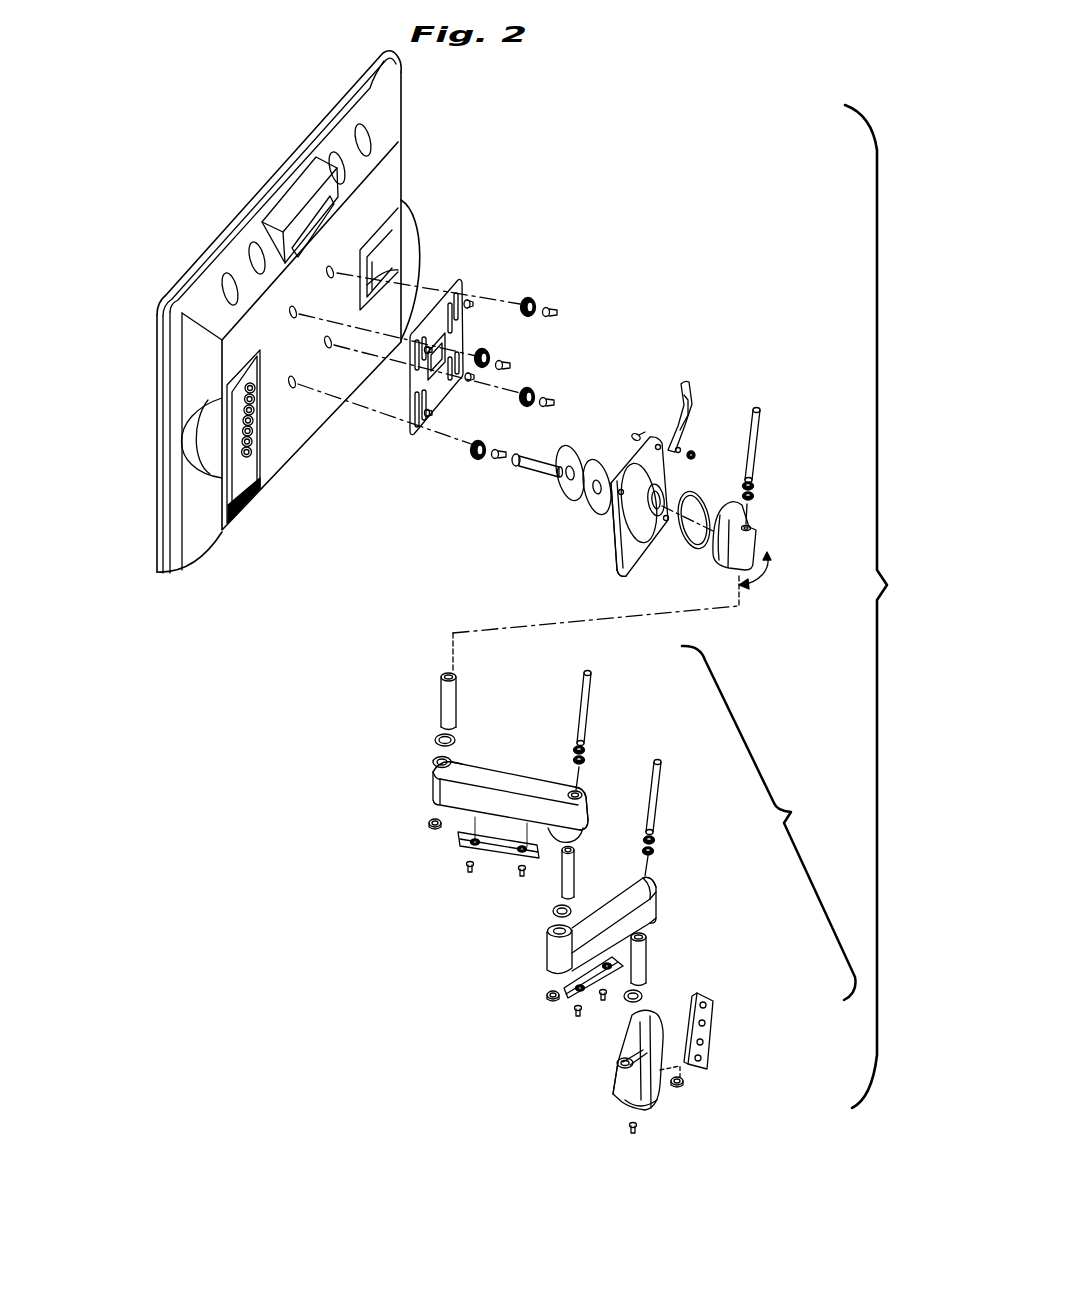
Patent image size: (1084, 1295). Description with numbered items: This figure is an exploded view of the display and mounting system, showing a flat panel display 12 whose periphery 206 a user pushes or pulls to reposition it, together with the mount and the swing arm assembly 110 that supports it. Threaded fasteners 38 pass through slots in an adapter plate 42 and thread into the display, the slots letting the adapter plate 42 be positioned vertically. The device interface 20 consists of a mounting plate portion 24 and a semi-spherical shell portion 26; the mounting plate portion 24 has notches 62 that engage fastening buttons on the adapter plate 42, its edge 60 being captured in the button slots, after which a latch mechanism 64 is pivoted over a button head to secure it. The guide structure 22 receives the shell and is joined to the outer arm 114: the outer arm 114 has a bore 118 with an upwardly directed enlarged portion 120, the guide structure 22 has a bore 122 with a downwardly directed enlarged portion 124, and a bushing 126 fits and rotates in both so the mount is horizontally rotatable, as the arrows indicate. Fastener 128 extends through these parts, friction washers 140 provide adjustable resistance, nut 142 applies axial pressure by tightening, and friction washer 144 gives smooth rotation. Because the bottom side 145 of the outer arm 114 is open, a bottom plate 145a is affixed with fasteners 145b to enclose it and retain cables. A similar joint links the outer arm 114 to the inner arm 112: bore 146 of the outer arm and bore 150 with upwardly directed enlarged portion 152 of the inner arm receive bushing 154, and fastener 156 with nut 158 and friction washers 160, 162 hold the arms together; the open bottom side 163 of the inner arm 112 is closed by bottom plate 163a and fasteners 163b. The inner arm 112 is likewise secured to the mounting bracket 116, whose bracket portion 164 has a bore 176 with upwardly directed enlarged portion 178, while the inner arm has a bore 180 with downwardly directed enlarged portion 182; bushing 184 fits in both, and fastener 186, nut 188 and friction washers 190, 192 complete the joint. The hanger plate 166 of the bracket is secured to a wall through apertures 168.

The flat panel display 12 is at (206, 548).
The periphery 206 is at (157, 413).
The adapter plate 42 is at (410, 432).
The threaded fasteners 38 is at (430, 340).
The notches 62 is at (653, 446).
The edge 60 is at (630, 450).
The latch mechanism 64 is at (693, 382).
The mounting plate portion 24 is at (650, 545).
The semi-spherical shell portion 26 is at (620, 533).
The device interface 20 is at (632, 570).
The fastener 128 is at (760, 437).
The friction washers 140 is at (754, 496).
The guide structure 22 is at (757, 535).
The bore 122 is at (750, 527).
The enlarged portion 124 is at (722, 583).
The swing arm assembly 110 is at (769, 823).
The bushing 126 is at (441, 688).
The friction washer 144 is at (435, 738).
The outer arm 114 is at (498, 771).
The bore 118 is at (433, 763).
The enlarged portion 120 is at (448, 767).
The bottom side 145 is at (580, 831).
The bore 146 is at (579, 793).
The fastener 156 is at (592, 676).
The friction washers 160 is at (585, 760).
The nut 142 is at (431, 826).
The bottom plate 145a is at (500, 854).
The fasteners 145b is at (466, 868).
The fastener 186 is at (663, 793).
The friction washers 190 is at (654, 852).
The bushing 154 is at (575, 870).
The friction washers 162 is at (553, 909).
The enlarged portion 152 is at (547, 950).
The bore 150 is at (547, 930).
The inner arm 112 is at (657, 891).
The bore 180 is at (645, 878).
The enlarged portion 182 is at (656, 918).
The bushing 184 is at (646, 951).
The friction washers 192 is at (642, 994).
The bottom side 163 is at (622, 960).
The bottom plate 163a is at (587, 1002).
The fasteners 163b is at (574, 1012).
The nut 158 is at (547, 996).
The mounting bracket 116 is at (655, 1110).
The enlarged portion 178 is at (617, 1060).
The bore 176 is at (613, 1085).
The bracket portion 164 is at (613, 1095).
The hanger plate 166 is at (710, 1001).
The apertures 168 is at (712, 1026).
The nut 188 is at (684, 1084).